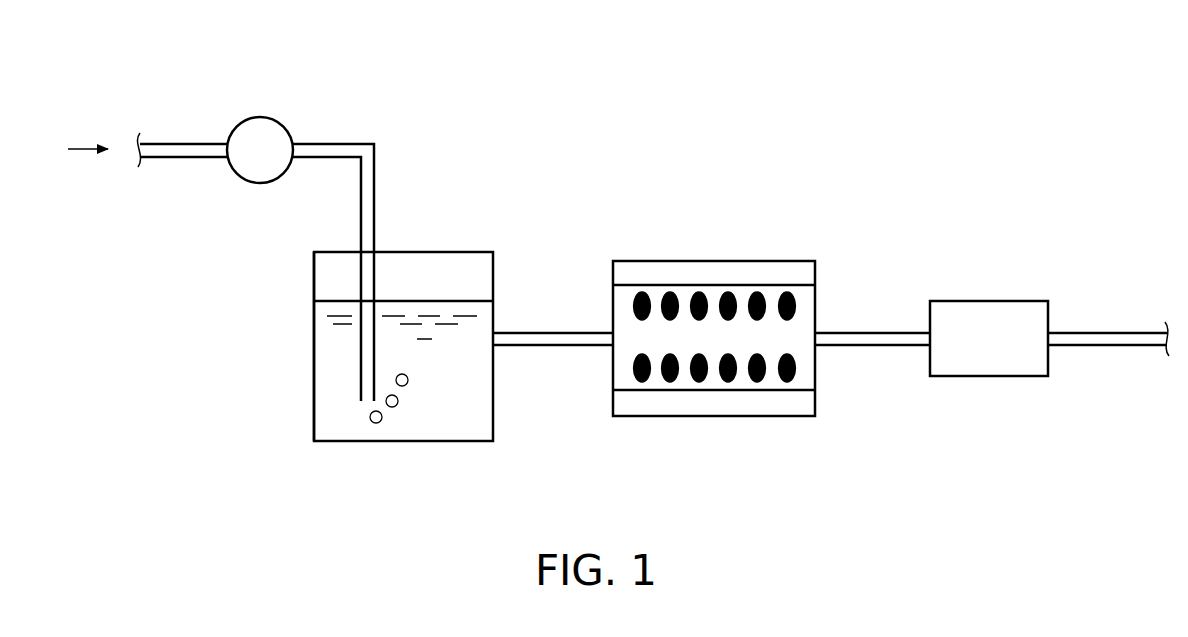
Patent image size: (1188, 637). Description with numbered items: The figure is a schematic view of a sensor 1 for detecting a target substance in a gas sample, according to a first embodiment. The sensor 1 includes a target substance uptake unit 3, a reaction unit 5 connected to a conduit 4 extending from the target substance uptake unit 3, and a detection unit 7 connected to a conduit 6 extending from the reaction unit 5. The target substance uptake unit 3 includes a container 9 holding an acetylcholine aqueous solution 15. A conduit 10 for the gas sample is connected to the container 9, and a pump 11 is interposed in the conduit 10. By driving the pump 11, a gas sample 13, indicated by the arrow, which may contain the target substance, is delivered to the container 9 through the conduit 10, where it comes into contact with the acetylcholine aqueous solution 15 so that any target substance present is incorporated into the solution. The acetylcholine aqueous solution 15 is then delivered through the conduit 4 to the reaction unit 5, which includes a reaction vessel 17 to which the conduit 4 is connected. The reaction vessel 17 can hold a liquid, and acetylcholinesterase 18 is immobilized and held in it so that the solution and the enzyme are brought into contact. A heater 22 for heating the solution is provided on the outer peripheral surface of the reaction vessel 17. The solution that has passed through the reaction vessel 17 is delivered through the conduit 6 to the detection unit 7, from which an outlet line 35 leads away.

The sensor 1 is at (688, 81).
The target substance uptake unit 3 is at (304, 341).
The conduit 4 is at (536, 333).
The reaction unit 5 is at (714, 300).
The conduit 6 is at (878, 332).
The detection unit 7 is at (989, 275).
The container 9 is at (313, 413).
The conduit 10 is at (354, 143).
The pump 11 is at (263, 117).
The gas sample 13 is at (86, 147).
The acetylcholine aqueous solution 15 is at (462, 423).
The reaction vessel 17 is at (670, 392).
The acetylcholinesterase 18 is at (641, 382).
The heater 22 is at (766, 262).
The outlet pipe 35 is at (1107, 332).